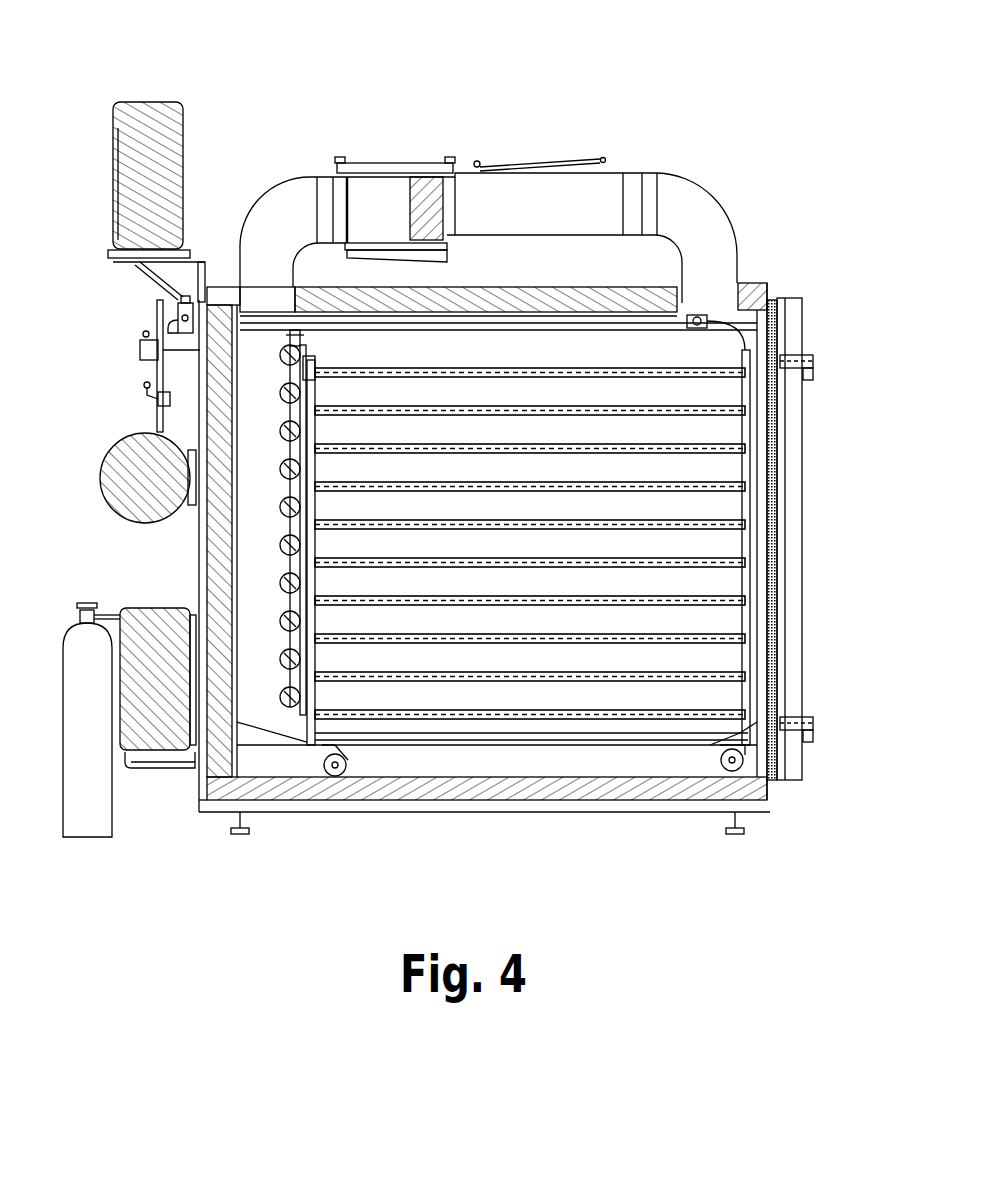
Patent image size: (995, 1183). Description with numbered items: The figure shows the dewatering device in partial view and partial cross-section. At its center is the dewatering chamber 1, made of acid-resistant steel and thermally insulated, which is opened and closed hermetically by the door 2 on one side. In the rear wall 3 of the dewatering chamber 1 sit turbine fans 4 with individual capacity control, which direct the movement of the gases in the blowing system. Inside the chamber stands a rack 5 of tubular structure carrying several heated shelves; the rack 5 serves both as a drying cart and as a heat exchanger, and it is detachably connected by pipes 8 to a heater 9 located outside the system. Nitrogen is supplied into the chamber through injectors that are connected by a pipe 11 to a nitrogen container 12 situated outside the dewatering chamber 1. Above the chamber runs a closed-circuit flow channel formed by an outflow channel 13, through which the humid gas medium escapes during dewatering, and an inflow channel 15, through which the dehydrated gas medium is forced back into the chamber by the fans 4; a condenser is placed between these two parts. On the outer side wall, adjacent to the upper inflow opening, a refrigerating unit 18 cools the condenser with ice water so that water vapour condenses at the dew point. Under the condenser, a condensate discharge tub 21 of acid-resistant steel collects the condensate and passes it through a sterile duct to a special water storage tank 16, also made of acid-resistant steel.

The dewatering chamber 1 is at (770, 291).
The door 2 is at (793, 452).
The rear wall 3 is at (300, 345).
The turbine fans 4 is at (289, 352).
The rack 5 is at (600, 366).
The pipes 8 is at (155, 372).
The heater 9 is at (124, 456).
The pipe 11 is at (172, 770).
The nitrogen container 12 is at (80, 673).
The outflow channel 13 is at (565, 185).
The inflow channel 15 is at (301, 195).
The water storage tank 16 is at (142, 630).
The refrigerating unit 18 is at (141, 150).
The condensate discharge tub 21 is at (363, 243).